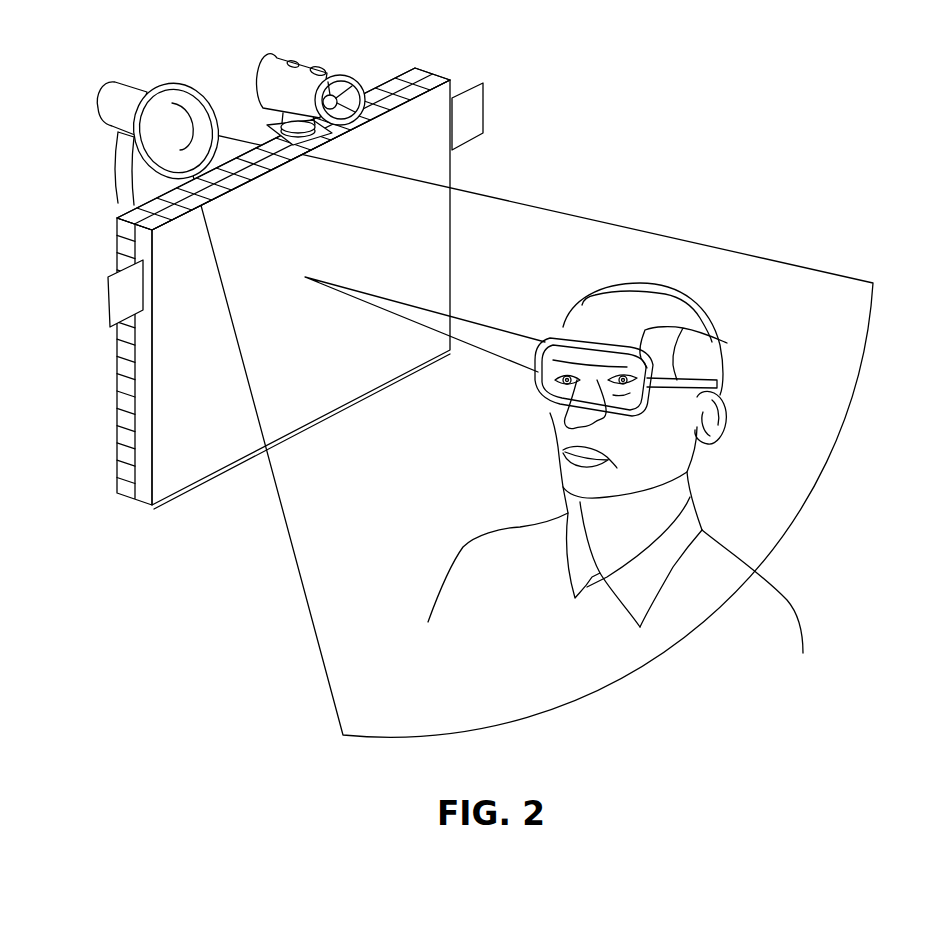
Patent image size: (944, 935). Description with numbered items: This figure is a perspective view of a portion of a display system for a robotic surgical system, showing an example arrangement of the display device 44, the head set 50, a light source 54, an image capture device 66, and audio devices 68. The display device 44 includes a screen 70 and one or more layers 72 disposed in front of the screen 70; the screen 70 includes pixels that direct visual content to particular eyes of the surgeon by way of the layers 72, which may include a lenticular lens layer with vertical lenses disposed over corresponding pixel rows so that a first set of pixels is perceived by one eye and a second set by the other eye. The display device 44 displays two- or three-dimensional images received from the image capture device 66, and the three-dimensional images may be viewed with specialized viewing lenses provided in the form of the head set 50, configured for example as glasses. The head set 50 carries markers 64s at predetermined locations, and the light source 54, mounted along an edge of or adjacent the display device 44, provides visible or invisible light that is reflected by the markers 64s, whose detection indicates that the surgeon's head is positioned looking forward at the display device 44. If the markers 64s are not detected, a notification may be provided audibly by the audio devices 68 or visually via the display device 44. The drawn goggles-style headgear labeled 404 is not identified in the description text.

The display device 44 is at (482, 174).
The head set 50 is at (638, 315).
The light source 54 is at (112, 92).
The markers 64s is at (552, 338).
The image capture device 66 is at (268, 84).
The audio devices 68 is at (118, 300).
The screen 70 is at (414, 68).
The layers 72 is at (441, 75).
The goggles 404 is at (601, 343).